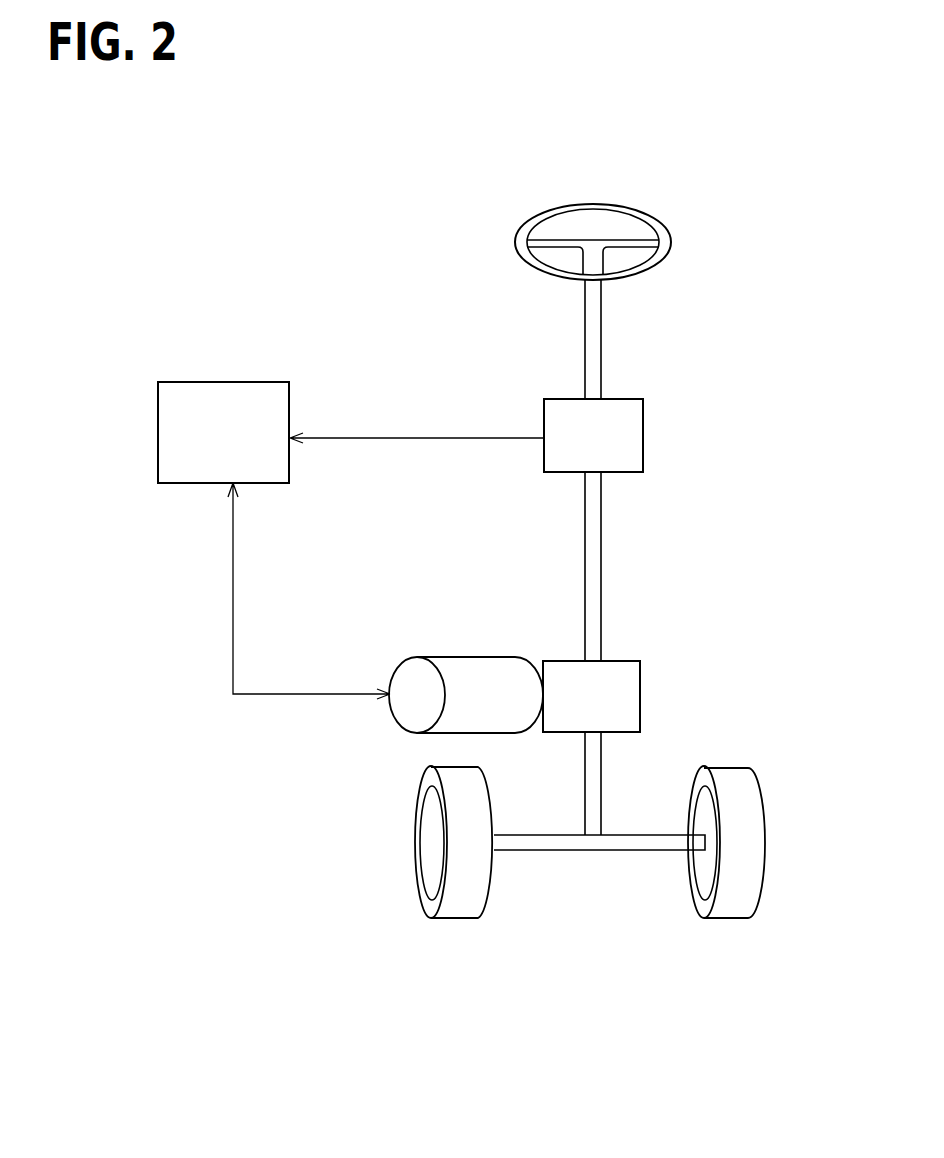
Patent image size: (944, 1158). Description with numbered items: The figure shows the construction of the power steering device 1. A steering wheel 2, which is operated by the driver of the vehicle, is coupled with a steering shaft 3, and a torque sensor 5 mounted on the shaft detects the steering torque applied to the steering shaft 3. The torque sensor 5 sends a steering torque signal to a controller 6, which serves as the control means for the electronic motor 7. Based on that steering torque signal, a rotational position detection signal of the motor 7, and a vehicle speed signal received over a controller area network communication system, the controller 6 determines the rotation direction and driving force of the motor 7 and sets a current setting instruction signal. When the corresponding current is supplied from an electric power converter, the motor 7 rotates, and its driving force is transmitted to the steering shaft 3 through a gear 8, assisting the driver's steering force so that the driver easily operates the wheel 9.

The power steering device 1 is at (440, 210).
The steering wheel 2 is at (671, 240).
The steering shaft 3 is at (601, 323).
The torque sensor 5 is at (643, 437).
The controller 6 is at (235, 382).
The electronic motor 7 is at (465, 657).
The gear 8 is at (640, 692).
The wheel 9 is at (765, 835).